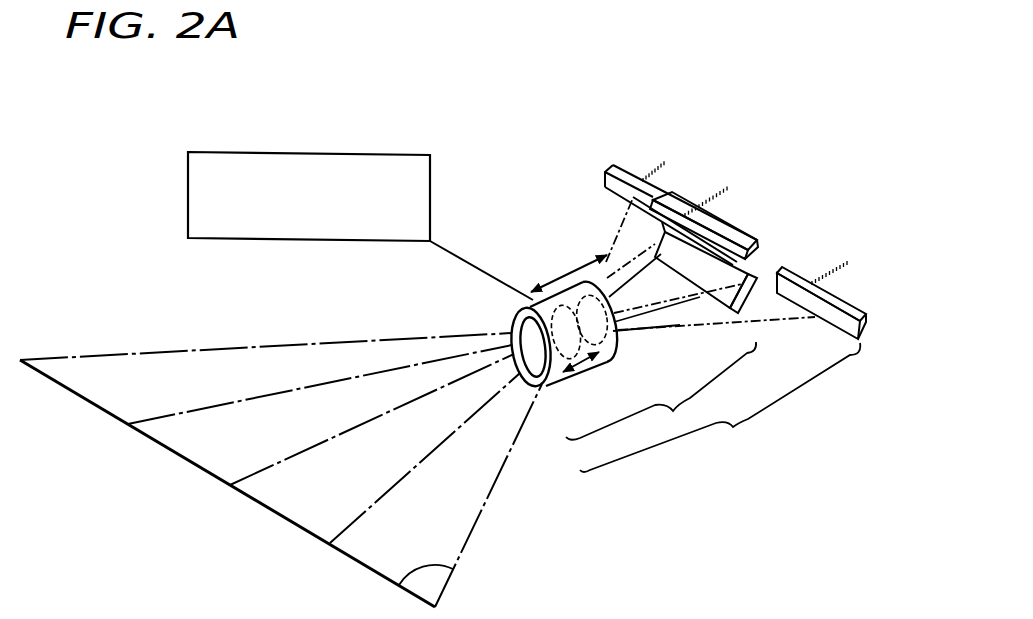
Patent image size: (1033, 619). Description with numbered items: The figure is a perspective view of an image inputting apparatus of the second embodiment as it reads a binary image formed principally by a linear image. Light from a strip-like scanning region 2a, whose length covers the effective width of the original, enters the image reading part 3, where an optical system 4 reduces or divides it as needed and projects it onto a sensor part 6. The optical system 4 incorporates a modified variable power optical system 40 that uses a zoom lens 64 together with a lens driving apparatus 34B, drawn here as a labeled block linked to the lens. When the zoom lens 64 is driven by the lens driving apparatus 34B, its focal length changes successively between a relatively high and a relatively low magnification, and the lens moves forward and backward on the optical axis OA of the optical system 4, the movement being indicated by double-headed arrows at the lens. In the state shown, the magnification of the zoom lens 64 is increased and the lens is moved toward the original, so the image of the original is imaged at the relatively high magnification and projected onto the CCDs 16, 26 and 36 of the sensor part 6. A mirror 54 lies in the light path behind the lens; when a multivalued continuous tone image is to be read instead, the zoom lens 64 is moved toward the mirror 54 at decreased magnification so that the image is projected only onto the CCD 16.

The lens driving apparatus 34B is at (273, 152).
The variable power optical system 40 is at (598, 247).
The CCD 26 is at (618, 170).
The CCD 16 is at (737, 238).
The sensor part 6 is at (778, 240).
The CCD 36 is at (790, 273).
The mirror 54 is at (728, 311).
The zoom lens 64 is at (582, 369).
The optical system 4 is at (661, 391).
The image reading part 3 is at (720, 407).
The strip-like scanning region 2a is at (455, 568).
The optical axis OA is at (396, 406).